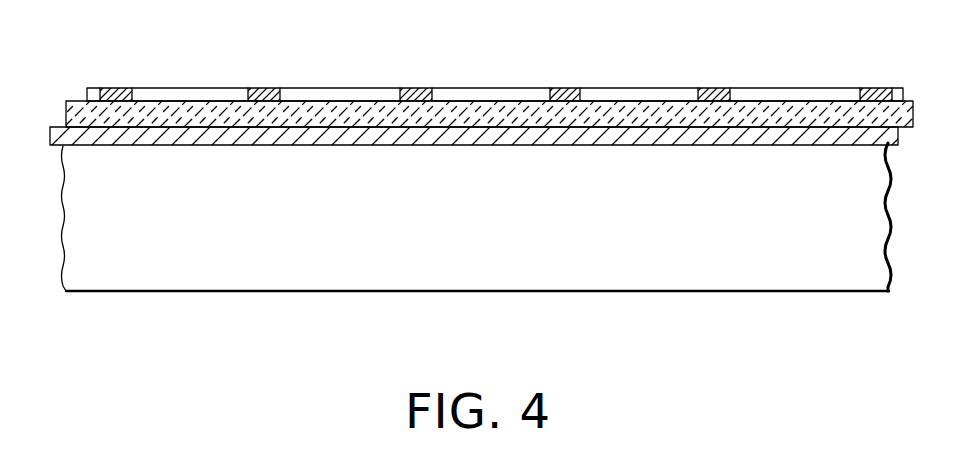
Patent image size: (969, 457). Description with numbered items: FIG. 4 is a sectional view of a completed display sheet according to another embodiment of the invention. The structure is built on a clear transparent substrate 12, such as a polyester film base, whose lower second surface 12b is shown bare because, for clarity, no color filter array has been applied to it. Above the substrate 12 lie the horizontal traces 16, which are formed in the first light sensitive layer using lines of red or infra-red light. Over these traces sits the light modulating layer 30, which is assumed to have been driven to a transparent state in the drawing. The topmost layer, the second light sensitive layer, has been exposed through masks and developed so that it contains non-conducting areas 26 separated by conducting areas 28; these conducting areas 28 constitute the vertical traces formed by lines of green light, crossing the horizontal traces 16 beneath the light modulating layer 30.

The substrate 12 is at (145, 273).
The second surface of substrate 12b is at (240, 293).
The horizontal traces 16 is at (145, 143).
The light modulating layer 30 is at (78, 112).
The non-conducting areas 26 is at (203, 92).
The conducting areas 28 is at (410, 87).